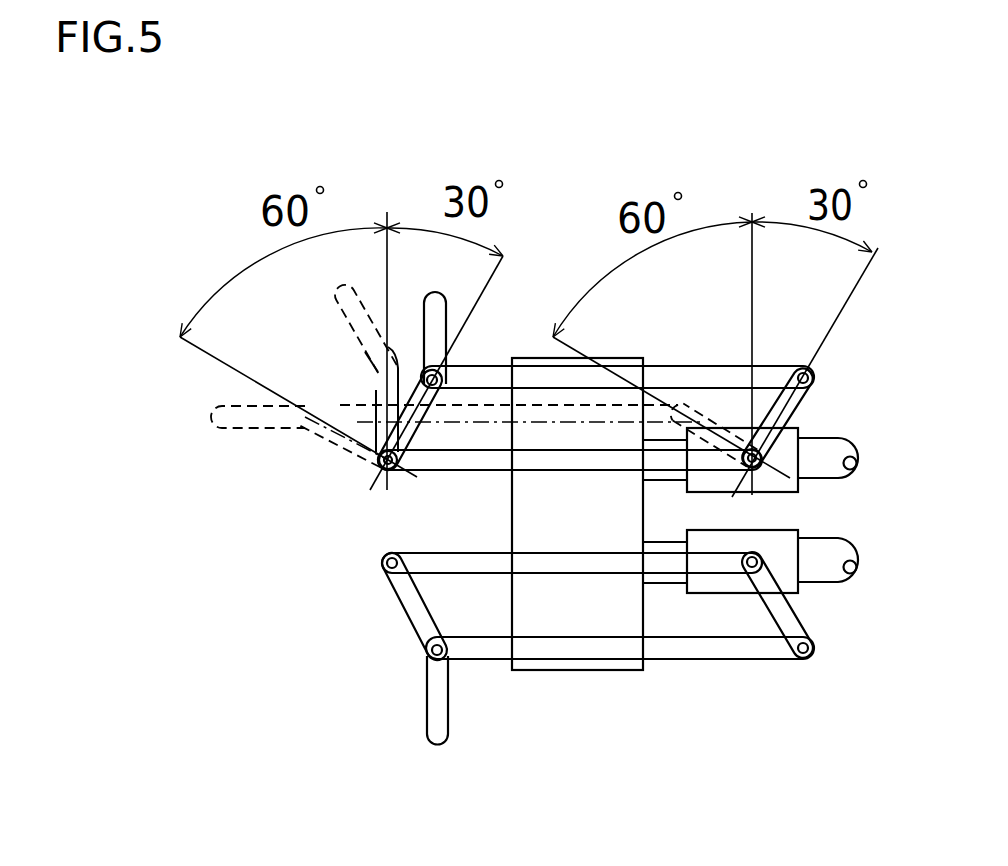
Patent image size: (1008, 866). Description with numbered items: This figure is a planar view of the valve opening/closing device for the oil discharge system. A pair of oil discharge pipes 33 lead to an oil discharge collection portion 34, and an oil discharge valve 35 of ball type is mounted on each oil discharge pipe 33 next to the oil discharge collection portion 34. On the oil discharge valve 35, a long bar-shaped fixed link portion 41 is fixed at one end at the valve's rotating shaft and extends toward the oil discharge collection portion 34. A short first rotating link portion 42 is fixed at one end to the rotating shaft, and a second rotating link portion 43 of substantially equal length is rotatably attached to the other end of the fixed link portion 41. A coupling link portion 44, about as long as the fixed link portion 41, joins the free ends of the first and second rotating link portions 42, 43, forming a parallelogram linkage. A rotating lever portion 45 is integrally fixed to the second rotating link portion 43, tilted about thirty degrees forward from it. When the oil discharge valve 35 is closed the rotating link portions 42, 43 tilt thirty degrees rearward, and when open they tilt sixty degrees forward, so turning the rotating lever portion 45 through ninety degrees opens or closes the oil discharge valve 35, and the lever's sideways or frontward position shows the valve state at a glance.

The oil discharge pipe 33 is at (852, 480).
The oil discharge collection portion 34 is at (603, 670).
The oil discharge valve 35 is at (776, 493).
The fixed link portion 41 is at (490, 470).
The first rotating link portion 42 is at (803, 401).
The second rotating link portion 43 is at (413, 393).
The coupling link portion 44 is at (693, 366).
The rotating lever portion 45 is at (446, 302).